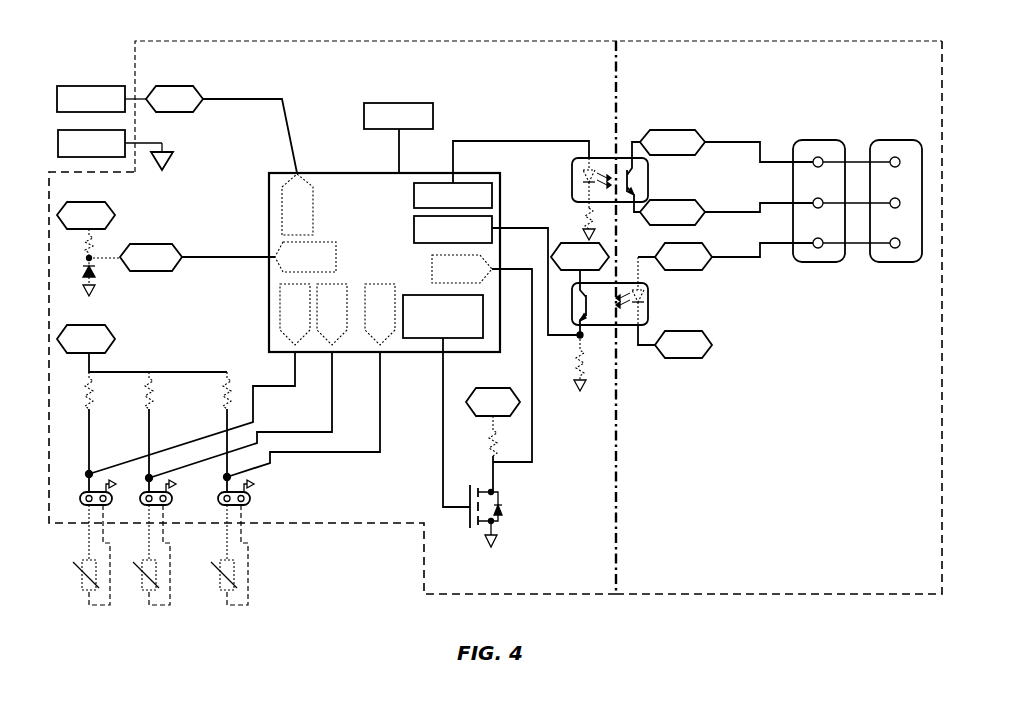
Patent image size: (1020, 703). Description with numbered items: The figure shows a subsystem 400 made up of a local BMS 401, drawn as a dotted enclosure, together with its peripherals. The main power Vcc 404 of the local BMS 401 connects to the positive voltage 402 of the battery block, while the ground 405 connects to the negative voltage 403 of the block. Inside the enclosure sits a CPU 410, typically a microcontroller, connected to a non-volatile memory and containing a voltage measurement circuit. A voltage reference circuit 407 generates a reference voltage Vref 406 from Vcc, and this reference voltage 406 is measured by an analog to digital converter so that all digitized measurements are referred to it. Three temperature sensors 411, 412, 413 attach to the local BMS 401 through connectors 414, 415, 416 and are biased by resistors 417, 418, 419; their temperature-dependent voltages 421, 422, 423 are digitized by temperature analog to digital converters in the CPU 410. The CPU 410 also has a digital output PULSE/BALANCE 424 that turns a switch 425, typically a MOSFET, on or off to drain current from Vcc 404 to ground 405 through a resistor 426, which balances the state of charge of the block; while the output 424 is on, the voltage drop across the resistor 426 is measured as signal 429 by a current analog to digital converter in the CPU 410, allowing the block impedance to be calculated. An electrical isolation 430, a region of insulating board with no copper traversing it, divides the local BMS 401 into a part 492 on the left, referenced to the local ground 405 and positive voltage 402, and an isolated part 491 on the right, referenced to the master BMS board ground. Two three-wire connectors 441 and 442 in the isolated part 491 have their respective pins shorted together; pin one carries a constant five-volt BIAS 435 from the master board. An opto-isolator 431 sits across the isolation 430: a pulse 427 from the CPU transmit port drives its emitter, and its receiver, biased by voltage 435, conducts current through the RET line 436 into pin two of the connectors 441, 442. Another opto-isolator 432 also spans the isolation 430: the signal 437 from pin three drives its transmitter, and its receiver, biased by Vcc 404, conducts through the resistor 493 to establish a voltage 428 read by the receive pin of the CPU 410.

The subsystem 400 is at (100, 42).
The local BMS 401 is at (222, 42).
The positive voltage of the battery block 402 is at (72, 86).
The negative voltage of the battery block 403 is at (60, 138).
The main power (Vcc) 404 is at (200, 100).
The ground (Gnd) 405 is at (178, 147).
The reference voltage (Vref) 406 is at (200, 257).
The voltage reference circuit 407 is at (108, 277).
The central processing unit (CPU) 410 is at (330, 172).
The temperature sensor 411 is at (82, 596).
The temperature sensor 412 is at (142, 598).
The temperature sensor 413 is at (220, 596).
The connector 414 is at (82, 512).
The connector 415 is at (148, 512).
The connector 416 is at (222, 512).
The resistor 417 is at (83, 405).
The resistor 418 is at (146, 400).
The resistor 419 is at (217, 396).
The voltage 421 is at (285, 387).
The voltage 422 is at (332, 400).
The voltage 423 is at (340, 452).
The digital output PULSE/BALANCE 424 is at (443, 410).
The switch 425 is at (507, 503).
The resistor 426 is at (500, 447).
The pulse 427 is at (478, 141).
The voltage 428 is at (510, 225).
The signal 429 is at (532, 402).
The electrical isolation 430 is at (620, 95).
The opto-isolator 431 is at (650, 172).
The opto-isolator 432 is at (650, 302).
The constant 5 volts (BIAS) 435 is at (744, 141).
The RET line 436 is at (730, 213).
The signal 437 is at (738, 258).
The 3-wire connector C1 441 is at (813, 136).
The 3-wire connector C2 442 is at (888, 136).
The isolated part 491 is at (732, 553).
The part 492 is at (553, 548).
The resistor 493 is at (596, 365).